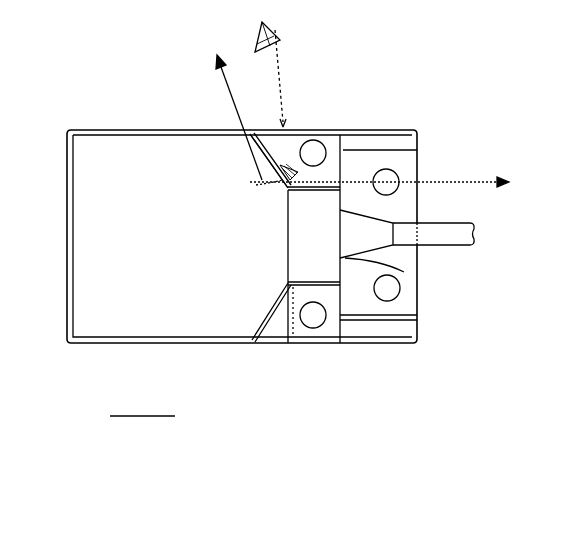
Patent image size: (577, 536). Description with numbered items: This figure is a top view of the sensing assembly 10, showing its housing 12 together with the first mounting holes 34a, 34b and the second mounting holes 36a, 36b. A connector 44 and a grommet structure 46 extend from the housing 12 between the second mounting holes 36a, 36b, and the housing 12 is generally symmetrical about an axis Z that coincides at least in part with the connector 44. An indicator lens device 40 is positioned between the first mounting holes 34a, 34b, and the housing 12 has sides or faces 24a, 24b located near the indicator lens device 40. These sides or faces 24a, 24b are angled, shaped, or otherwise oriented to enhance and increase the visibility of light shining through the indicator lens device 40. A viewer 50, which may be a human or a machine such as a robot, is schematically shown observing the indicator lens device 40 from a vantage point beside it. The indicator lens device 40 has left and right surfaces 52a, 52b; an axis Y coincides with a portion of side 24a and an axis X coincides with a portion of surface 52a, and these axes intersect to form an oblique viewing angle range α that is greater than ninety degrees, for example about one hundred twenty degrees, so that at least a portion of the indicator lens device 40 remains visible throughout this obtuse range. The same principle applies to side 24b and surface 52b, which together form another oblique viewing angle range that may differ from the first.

The sensing assembly 10 is at (44, 106).
The housing 12 is at (188, 128).
The side or face 24a is at (281, 165).
The side or face 24b is at (272, 320).
The first mounting hole 34a is at (360, 341).
The first mounting hole 34b is at (323, 198).
The second mounting hole 36a is at (398, 297).
The second mounting hole 36b is at (398, 178).
The indicator lens device 40 is at (317, 202).
The connector 44 is at (438, 222).
The grommet structure 46 is at (404, 272).
The viewer 50 is at (274, 27).
The surface 52a is at (320, 140).
The surface 52b is at (293, 322).